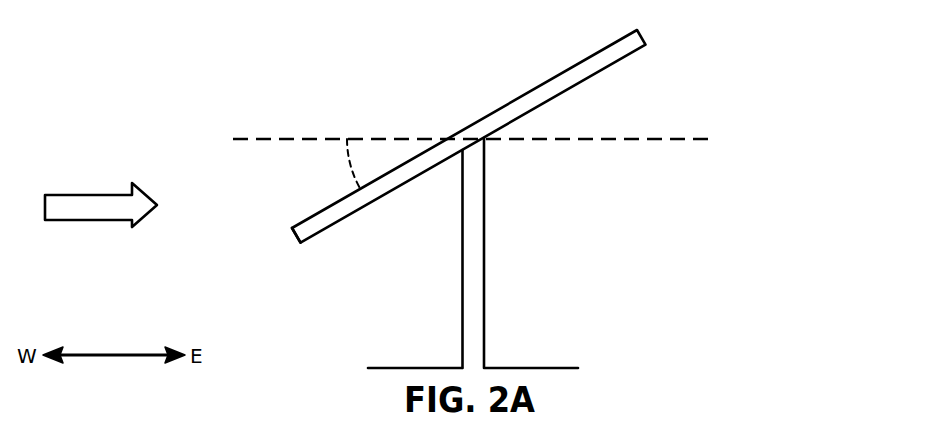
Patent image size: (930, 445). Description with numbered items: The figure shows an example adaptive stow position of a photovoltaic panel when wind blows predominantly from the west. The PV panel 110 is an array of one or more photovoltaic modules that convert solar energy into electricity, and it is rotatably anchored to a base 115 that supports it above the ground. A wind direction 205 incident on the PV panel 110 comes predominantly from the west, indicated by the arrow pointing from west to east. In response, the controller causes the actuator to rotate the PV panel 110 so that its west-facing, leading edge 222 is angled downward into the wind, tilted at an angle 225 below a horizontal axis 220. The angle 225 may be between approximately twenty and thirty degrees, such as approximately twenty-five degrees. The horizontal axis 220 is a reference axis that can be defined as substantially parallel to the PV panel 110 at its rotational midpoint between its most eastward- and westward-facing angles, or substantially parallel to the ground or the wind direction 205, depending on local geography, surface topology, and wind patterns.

The PV panel 110 is at (580, 60).
The base 115 is at (462, 303).
The horizontal axis 220 is at (710, 139).
The west-facing leading edge 222 is at (292, 229).
The angle 225 is at (345, 157).
The wind direction 205 is at (107, 243).